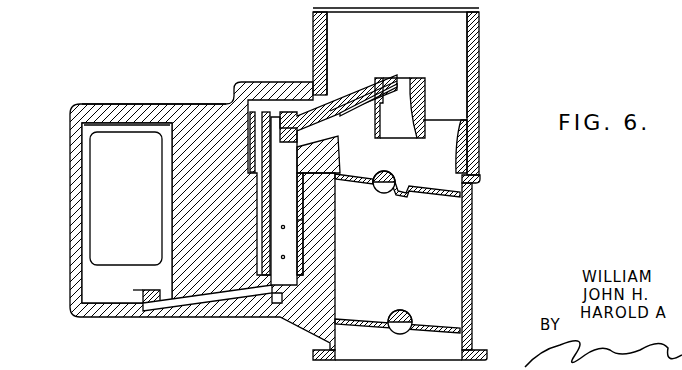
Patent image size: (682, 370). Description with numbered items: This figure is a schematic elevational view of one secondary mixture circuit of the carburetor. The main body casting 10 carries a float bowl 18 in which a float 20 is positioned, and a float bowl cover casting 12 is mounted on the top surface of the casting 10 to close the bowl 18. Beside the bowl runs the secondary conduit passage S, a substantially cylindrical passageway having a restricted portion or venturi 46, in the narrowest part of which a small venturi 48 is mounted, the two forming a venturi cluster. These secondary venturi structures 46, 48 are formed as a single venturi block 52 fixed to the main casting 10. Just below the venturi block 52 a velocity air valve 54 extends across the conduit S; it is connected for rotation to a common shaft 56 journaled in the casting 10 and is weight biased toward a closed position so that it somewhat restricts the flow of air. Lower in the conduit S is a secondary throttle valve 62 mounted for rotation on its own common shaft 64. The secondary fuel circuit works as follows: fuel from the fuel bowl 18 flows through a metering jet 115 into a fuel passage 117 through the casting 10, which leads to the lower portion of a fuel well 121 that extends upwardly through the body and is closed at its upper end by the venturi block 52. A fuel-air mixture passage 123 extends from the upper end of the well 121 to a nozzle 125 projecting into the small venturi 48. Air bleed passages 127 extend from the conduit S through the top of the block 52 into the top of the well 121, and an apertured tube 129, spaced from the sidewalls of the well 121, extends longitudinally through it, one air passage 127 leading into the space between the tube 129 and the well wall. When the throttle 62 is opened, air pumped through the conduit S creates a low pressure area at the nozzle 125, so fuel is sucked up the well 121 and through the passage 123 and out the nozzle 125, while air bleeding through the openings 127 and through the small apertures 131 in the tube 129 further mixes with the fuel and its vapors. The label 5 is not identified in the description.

The pipe wall 5 is at (468, 30).
The main body casting 10 is at (76, 222).
The float bowl cover casting 12 is at (227, 98).
The float bowl 18 is at (80, 167).
The float 20 is at (138, 244).
The venturi 46 is at (460, 133).
The small venturi 48 is at (411, 79).
The venturi block 52 is at (340, 157).
The velocity air valve 54 is at (427, 187).
The common shaft 56 is at (389, 174).
The secondary throttle valve 62 is at (352, 318).
The common shaft 64 is at (406, 311).
The metering jet 115 is at (150, 292).
The fuel passage 117 is at (199, 304).
The fuel well 121 is at (276, 304).
The fuel-air mixture passage 123 is at (349, 113).
The nozzle 125 is at (389, 84).
The air bleed passage 127 is at (280, 107).
The apertured tube 129 is at (299, 220).
The apertures 131 is at (286, 256).
The secondary conduit passage S is at (336, 270).